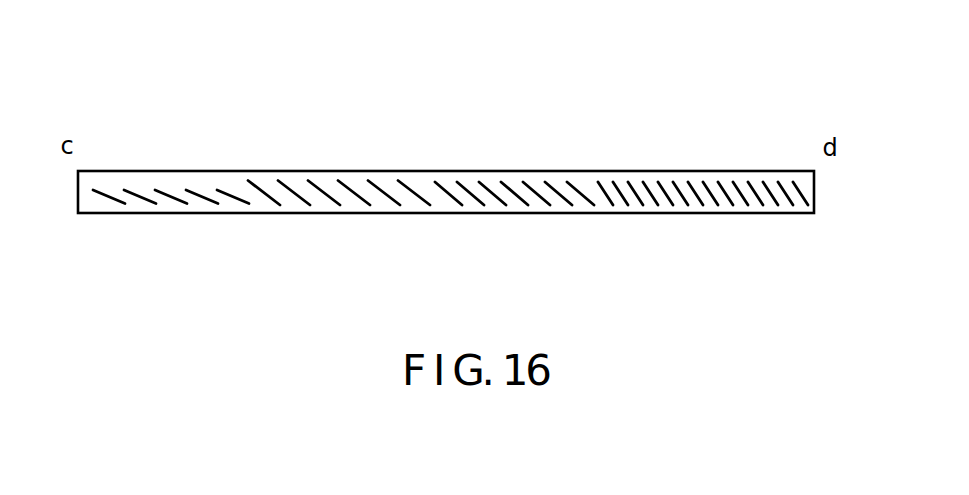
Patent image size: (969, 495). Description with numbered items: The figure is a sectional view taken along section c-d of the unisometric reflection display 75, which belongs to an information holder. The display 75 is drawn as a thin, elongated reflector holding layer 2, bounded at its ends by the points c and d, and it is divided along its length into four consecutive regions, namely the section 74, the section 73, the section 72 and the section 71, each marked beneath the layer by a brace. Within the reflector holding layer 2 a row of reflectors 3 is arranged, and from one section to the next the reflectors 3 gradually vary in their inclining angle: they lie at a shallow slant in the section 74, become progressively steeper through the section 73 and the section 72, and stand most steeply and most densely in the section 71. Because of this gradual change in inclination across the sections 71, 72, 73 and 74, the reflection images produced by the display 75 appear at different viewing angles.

The reflector holding layer 2 is at (450, 171).
The reflectors 3 is at (451, 196).
The section 71 is at (706, 237).
The section 72 is at (433, 225).
The section 73 is at (428, 225).
The section 74 is at (88, 225).
The unisometric reflection display 75 is at (492, 194).